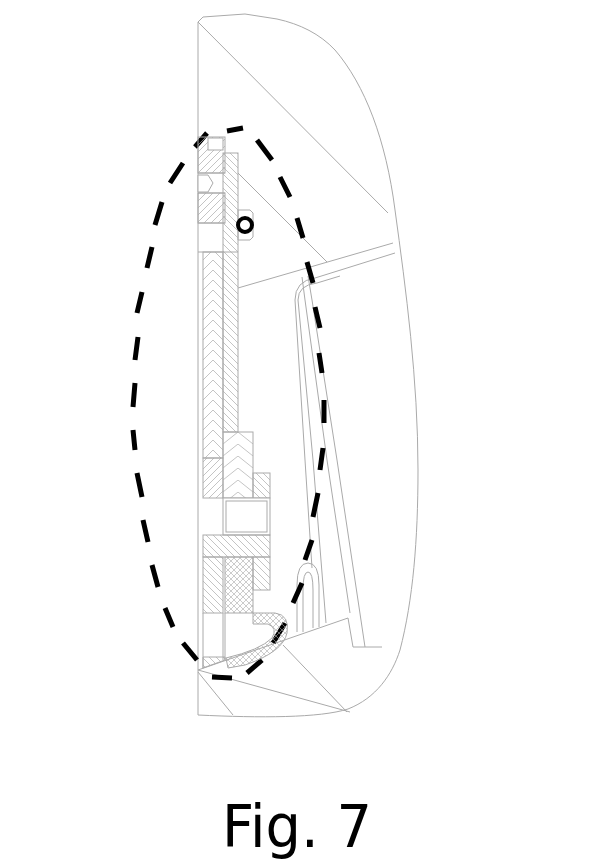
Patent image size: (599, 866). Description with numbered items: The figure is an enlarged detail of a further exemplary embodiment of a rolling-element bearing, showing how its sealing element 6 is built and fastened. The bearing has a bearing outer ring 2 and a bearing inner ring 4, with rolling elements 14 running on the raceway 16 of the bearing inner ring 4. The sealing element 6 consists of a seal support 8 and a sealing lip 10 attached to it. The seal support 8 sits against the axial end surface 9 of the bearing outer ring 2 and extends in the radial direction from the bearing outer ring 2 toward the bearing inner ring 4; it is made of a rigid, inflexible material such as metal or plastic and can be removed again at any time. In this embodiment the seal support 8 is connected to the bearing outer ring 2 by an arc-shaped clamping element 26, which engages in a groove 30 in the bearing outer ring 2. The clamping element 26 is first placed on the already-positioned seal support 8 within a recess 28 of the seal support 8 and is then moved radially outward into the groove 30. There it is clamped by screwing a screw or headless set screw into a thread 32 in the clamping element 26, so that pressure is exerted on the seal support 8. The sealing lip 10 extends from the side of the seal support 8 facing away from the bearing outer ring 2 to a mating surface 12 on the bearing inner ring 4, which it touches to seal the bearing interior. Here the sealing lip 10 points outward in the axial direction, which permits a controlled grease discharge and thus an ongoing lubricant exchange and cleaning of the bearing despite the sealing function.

The bearing outer ring 2 is at (232, 82).
The bearing inner ring 4 is at (333, 682).
The sealing element 6 is at (132, 359).
The seal support 8 is at (232, 373).
The axial end surface 9 is at (202, 138).
The sealing lip 10 is at (235, 592).
The mating surface 12 is at (243, 657).
The rolling elements 14 is at (400, 360).
The raceway 16 is at (380, 647).
The arc-shaped clamping element 26 is at (202, 212).
The recess 28 is at (205, 238).
The groove 30 is at (230, 128).
The thread 32 is at (218, 172).